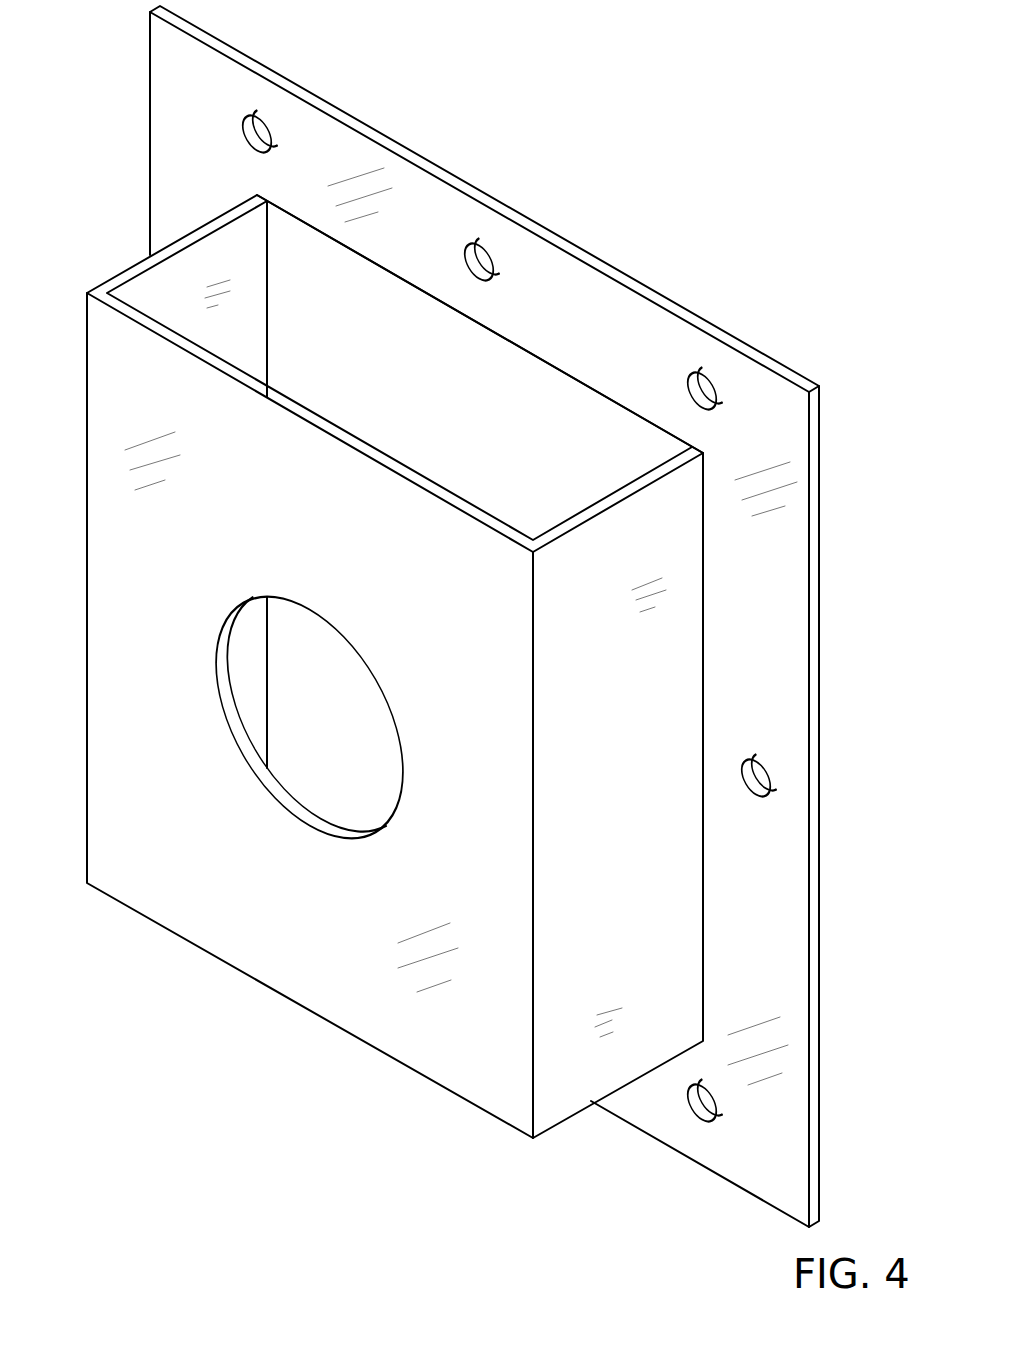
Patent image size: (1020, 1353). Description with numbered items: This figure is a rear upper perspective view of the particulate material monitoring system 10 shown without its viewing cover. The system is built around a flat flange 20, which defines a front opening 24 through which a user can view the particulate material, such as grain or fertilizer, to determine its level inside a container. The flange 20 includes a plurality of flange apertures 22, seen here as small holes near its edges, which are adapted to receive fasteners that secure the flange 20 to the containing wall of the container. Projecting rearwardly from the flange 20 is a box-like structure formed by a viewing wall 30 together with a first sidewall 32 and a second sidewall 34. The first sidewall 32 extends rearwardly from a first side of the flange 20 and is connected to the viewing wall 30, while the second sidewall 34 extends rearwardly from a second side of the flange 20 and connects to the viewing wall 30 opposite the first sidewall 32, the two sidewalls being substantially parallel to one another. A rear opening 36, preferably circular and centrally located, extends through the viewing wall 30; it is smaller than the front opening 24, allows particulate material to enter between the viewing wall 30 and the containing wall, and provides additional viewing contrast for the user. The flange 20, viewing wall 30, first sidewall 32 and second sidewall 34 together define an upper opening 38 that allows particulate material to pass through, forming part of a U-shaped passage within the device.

The particulate material monitoring system 10 is at (466, 624).
The flange 20 is at (520, 616).
The flange apertures 22 is at (477, 248).
The front opening 24 is at (580, 384).
The viewing wall 30 is at (373, 712).
The first sidewall 32 is at (240, 335).
The second sidewall 34 is at (557, 1052).
The rear opening 36 is at (300, 822).
The upper opening 38 is at (127, 282).